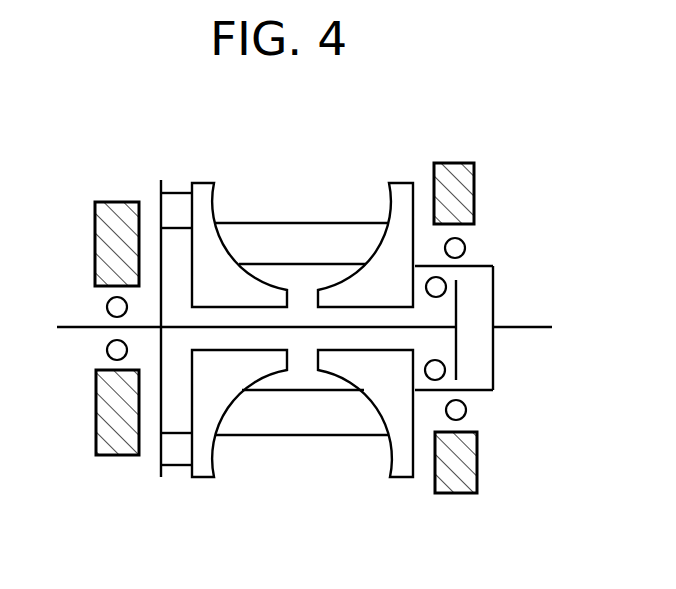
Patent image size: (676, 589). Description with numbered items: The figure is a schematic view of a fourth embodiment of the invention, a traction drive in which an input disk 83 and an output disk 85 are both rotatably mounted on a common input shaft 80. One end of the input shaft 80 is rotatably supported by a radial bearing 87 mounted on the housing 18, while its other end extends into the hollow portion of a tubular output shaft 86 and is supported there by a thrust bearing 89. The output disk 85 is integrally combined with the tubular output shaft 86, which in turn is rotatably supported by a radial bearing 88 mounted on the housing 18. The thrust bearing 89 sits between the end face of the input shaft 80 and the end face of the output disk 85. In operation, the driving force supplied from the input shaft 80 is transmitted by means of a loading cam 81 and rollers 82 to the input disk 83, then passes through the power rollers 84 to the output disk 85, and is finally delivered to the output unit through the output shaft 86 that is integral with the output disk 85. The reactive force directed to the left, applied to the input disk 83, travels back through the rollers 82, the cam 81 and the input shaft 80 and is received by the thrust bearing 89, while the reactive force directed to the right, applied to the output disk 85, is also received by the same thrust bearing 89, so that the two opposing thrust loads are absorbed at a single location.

The housing 18 is at (118, 204).
The input shaft 80 is at (63, 330).
The loading cam 81 is at (160, 453).
The rollers 82 is at (180, 453).
The input disk 83 is at (207, 462).
The power rollers 84 is at (298, 235).
The output disk 85 is at (405, 465).
The tubular output shaft 86 is at (540, 331).
The radial bearing 87 is at (107, 303).
The radial bearing 88 is at (462, 243).
The thrust bearing 89 is at (441, 283).